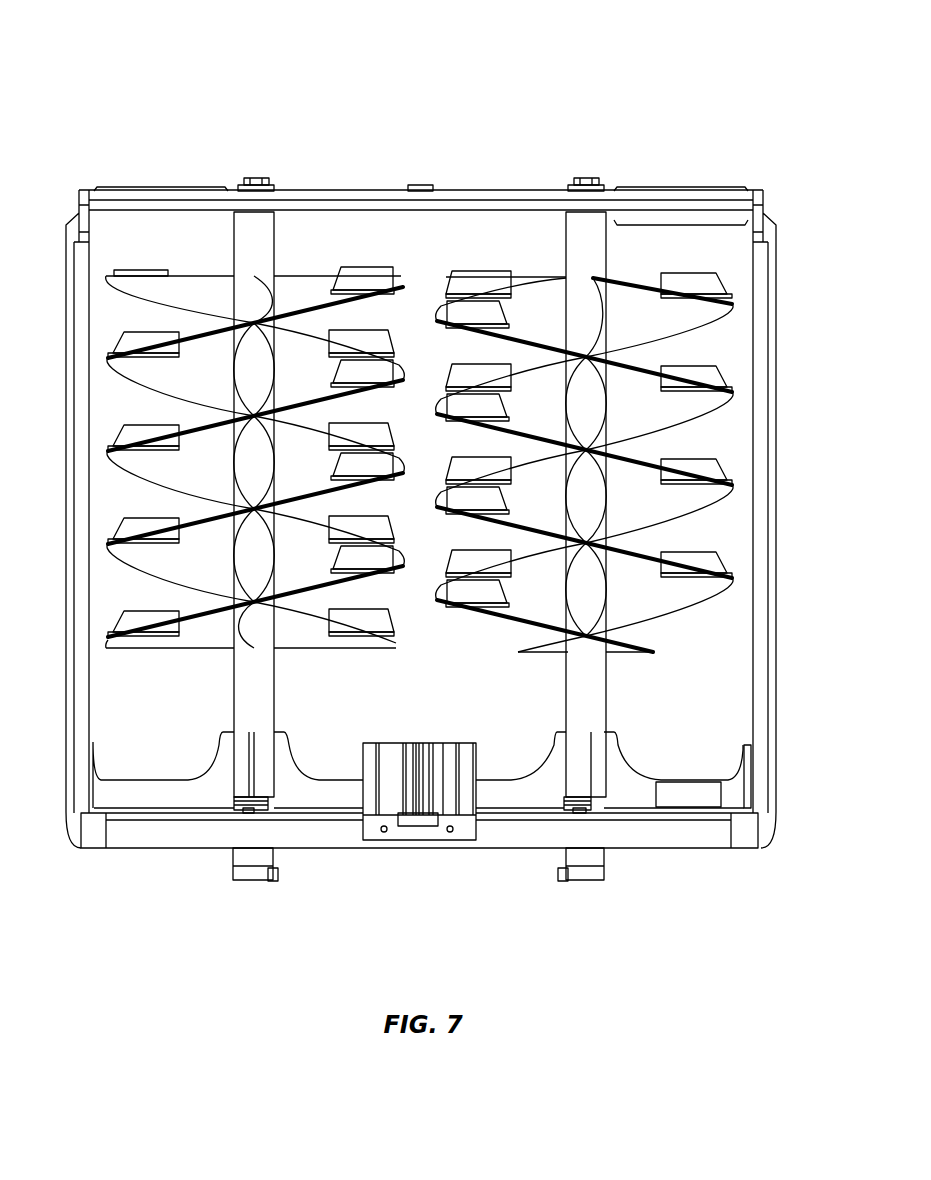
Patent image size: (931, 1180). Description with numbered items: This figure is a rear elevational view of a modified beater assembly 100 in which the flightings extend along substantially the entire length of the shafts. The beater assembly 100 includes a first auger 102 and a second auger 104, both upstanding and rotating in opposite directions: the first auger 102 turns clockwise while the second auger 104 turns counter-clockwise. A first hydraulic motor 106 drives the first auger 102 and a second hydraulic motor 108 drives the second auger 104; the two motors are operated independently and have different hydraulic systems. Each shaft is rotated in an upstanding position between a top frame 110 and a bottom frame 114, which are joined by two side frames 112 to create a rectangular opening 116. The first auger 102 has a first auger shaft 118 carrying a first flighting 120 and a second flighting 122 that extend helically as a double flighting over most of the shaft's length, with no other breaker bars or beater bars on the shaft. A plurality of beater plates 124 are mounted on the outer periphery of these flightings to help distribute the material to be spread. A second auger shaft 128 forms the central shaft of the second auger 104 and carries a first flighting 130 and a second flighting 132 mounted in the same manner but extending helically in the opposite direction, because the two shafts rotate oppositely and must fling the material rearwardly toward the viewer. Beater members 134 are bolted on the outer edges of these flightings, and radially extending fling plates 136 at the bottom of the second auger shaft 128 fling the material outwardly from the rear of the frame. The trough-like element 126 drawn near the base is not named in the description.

The beater assembly 100 is at (116, 52).
The first auger 102 is at (183, 252).
The second auger 104 is at (545, 258).
The first hydraulic motor 106 is at (230, 855).
The second hydraulic motor 108 is at (563, 855).
The top frame 110 is at (352, 198).
The side frames 112 is at (63, 520).
The bottom frame 114 is at (668, 840).
The rectangular opening 116 is at (735, 680).
The first auger shaft 118 is at (243, 700).
The first flighting 120 is at (345, 655).
The second flighting 122 is at (162, 655).
The beater plates 124 is at (160, 335).
The first trough 126 is at (210, 767).
The second auger shaft 128 is at (570, 718).
The first flighting 130 is at (553, 655).
The second flighting 132 is at (625, 655).
The beater members 134 is at (475, 276).
The fling plates 136 is at (553, 767).